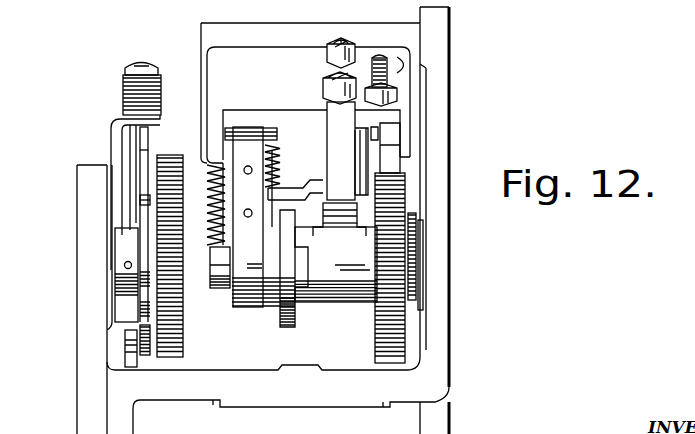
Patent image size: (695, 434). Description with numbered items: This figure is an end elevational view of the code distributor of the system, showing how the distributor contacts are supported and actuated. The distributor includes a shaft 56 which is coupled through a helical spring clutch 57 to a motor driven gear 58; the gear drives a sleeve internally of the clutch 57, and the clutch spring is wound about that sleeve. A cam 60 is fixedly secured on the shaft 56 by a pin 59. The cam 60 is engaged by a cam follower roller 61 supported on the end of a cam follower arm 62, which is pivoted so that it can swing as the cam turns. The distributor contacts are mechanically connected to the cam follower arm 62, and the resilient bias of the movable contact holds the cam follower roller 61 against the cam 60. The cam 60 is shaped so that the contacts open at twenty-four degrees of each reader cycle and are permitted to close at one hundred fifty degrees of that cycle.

The shaft 56 is at (220, 290).
The helical spring clutch 57 is at (327, 304).
The motor driven gear 58 is at (403, 333).
The pin 59 is at (124, 266).
The cam 60 is at (148, 200).
The cam follower roller 61 is at (146, 352).
The cam follower arm 62 is at (125, 362).